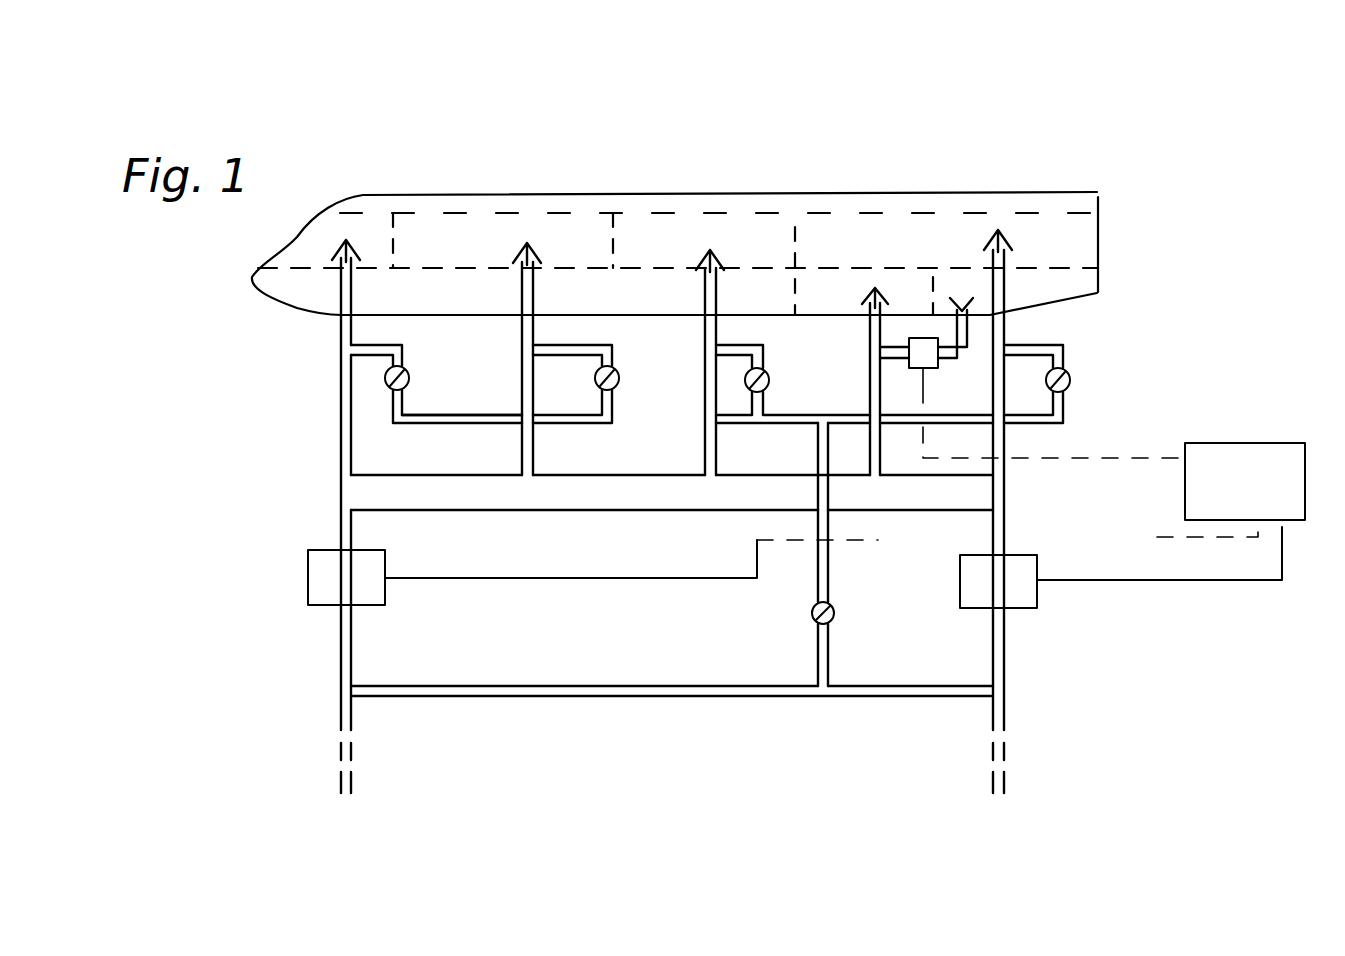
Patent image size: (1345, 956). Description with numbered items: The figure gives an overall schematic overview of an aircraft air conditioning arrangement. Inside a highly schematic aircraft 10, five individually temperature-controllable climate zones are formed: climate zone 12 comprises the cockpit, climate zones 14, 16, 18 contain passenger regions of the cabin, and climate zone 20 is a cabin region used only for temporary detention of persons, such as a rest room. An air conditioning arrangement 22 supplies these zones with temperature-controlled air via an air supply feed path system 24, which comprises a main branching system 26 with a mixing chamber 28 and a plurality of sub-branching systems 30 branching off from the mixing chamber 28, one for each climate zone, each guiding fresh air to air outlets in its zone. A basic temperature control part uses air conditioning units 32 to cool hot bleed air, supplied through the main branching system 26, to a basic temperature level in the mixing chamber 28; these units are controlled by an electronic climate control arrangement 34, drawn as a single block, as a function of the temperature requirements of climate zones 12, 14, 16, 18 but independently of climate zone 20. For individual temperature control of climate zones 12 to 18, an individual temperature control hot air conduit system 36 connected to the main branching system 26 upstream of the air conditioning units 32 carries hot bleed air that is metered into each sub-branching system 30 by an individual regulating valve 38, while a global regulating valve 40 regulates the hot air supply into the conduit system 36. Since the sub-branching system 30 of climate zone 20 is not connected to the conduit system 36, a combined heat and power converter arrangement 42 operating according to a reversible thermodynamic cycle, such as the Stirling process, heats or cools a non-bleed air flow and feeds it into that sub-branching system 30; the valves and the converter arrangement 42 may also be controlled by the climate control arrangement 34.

The aircraft 10 is at (1100, 207).
The climate zone 12 is at (325, 240).
The climate zone 14 is at (480, 238).
The climate zone 16 is at (688, 235).
The climate zone 18 is at (850, 232).
The climate zone 20 is at (820, 298).
The air conditioning arrangement 22 is at (278, 740).
The air supply feed path system 24 is at (322, 478).
The main branching system 26 is at (342, 645).
The mixing chamber 28 is at (572, 515).
The sub-branching system 30 is at (337, 372).
The air conditioning unit 32 is at (380, 605).
The climate control arrangement 34 is at (1222, 443).
The individual temperature control hot air conduit system 36 is at (452, 427).
The individual regulating valve 38 is at (407, 367).
The global regulating valve 40 is at (838, 613).
The combined heat and power converter arrangement 42 is at (923, 338).